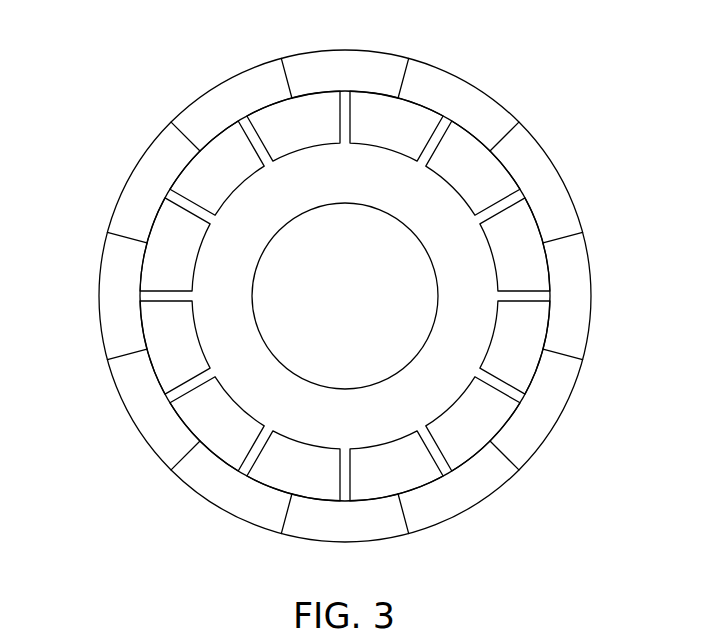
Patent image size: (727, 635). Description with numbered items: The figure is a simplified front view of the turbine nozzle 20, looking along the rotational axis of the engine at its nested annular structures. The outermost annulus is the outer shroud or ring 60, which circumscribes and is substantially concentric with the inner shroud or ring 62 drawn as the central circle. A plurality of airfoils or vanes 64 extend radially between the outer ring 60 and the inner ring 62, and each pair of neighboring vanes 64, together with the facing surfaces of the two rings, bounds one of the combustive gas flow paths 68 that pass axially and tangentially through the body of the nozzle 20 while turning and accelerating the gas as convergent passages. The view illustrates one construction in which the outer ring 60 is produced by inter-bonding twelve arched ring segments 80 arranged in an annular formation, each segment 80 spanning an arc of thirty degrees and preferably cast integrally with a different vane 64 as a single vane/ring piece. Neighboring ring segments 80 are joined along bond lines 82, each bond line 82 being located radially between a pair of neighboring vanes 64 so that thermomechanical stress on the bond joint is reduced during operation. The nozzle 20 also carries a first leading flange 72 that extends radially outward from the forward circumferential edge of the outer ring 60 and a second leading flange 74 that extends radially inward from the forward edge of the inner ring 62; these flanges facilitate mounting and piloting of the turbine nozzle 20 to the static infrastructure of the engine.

The turbine nozzle 20 is at (178, 58).
The outer shroud or ring 60 is at (451, 502).
The inner shroud or ring 62 is at (391, 384).
The airfoils or vanes 64 is at (339, 124).
The combustive gas flow paths 68 is at (283, 148).
The first leading flange 72 is at (500, 113).
The second leading flange 74 is at (292, 372).
The arched ring segments 80 is at (238, 74).
The bond lines 82 is at (193, 140).